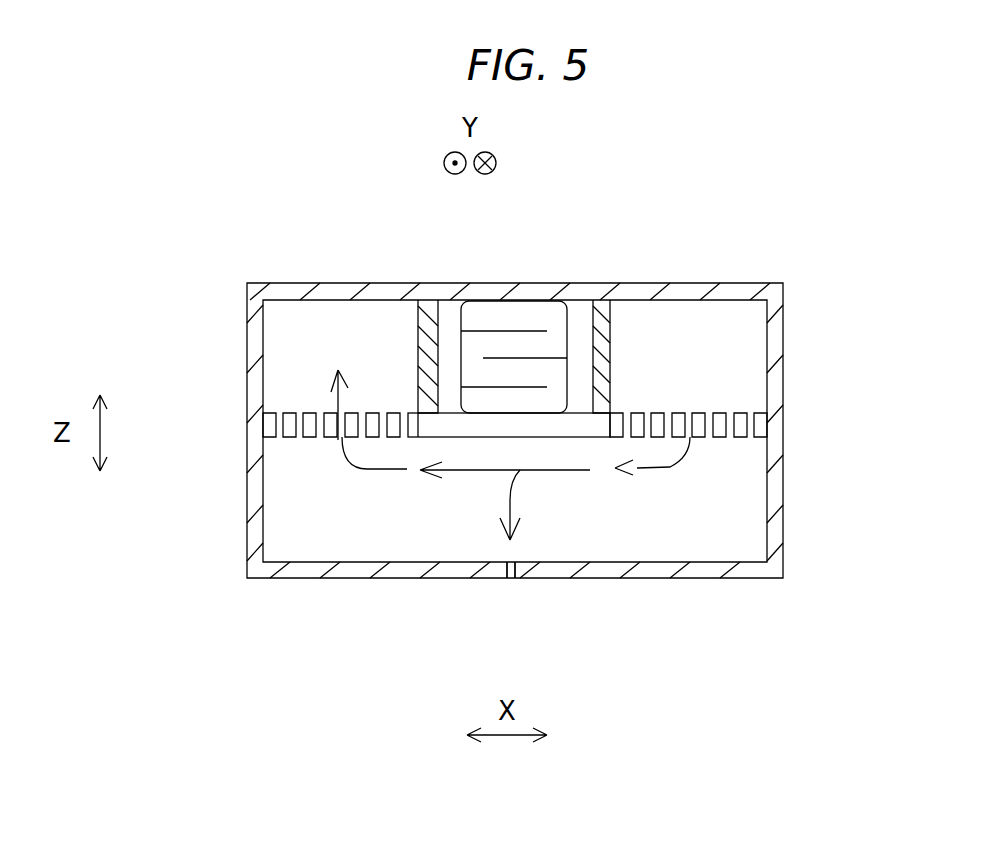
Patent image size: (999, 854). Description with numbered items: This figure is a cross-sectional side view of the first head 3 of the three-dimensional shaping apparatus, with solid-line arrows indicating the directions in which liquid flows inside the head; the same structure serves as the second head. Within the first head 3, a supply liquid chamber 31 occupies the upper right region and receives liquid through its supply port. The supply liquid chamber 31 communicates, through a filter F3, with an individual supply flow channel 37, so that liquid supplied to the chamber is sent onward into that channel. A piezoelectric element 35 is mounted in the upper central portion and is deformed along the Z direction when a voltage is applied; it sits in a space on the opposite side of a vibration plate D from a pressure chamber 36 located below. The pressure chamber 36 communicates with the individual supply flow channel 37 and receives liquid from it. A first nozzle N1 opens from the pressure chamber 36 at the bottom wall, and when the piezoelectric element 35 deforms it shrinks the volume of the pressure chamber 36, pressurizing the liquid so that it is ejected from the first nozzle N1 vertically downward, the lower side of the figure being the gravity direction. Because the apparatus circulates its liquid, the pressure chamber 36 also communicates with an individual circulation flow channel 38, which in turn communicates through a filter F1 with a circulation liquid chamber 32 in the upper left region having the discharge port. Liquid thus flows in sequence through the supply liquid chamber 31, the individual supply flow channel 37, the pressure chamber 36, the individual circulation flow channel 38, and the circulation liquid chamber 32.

The first head 3 is at (860, 273).
The supply liquid chamber 31 is at (719, 345).
The circulation liquid chamber 32 is at (313, 348).
The piezoelectric element 35 is at (531, 312).
The pressure chamber 36 is at (547, 513).
The individual supply flow channel 37 is at (699, 472).
The individual circulation flow channel 38 is at (318, 472).
The vibration plate D is at (458, 453).
The filter F1 is at (315, 408).
The filter F3 is at (740, 413).
The first nozzle N1 is at (507, 578).